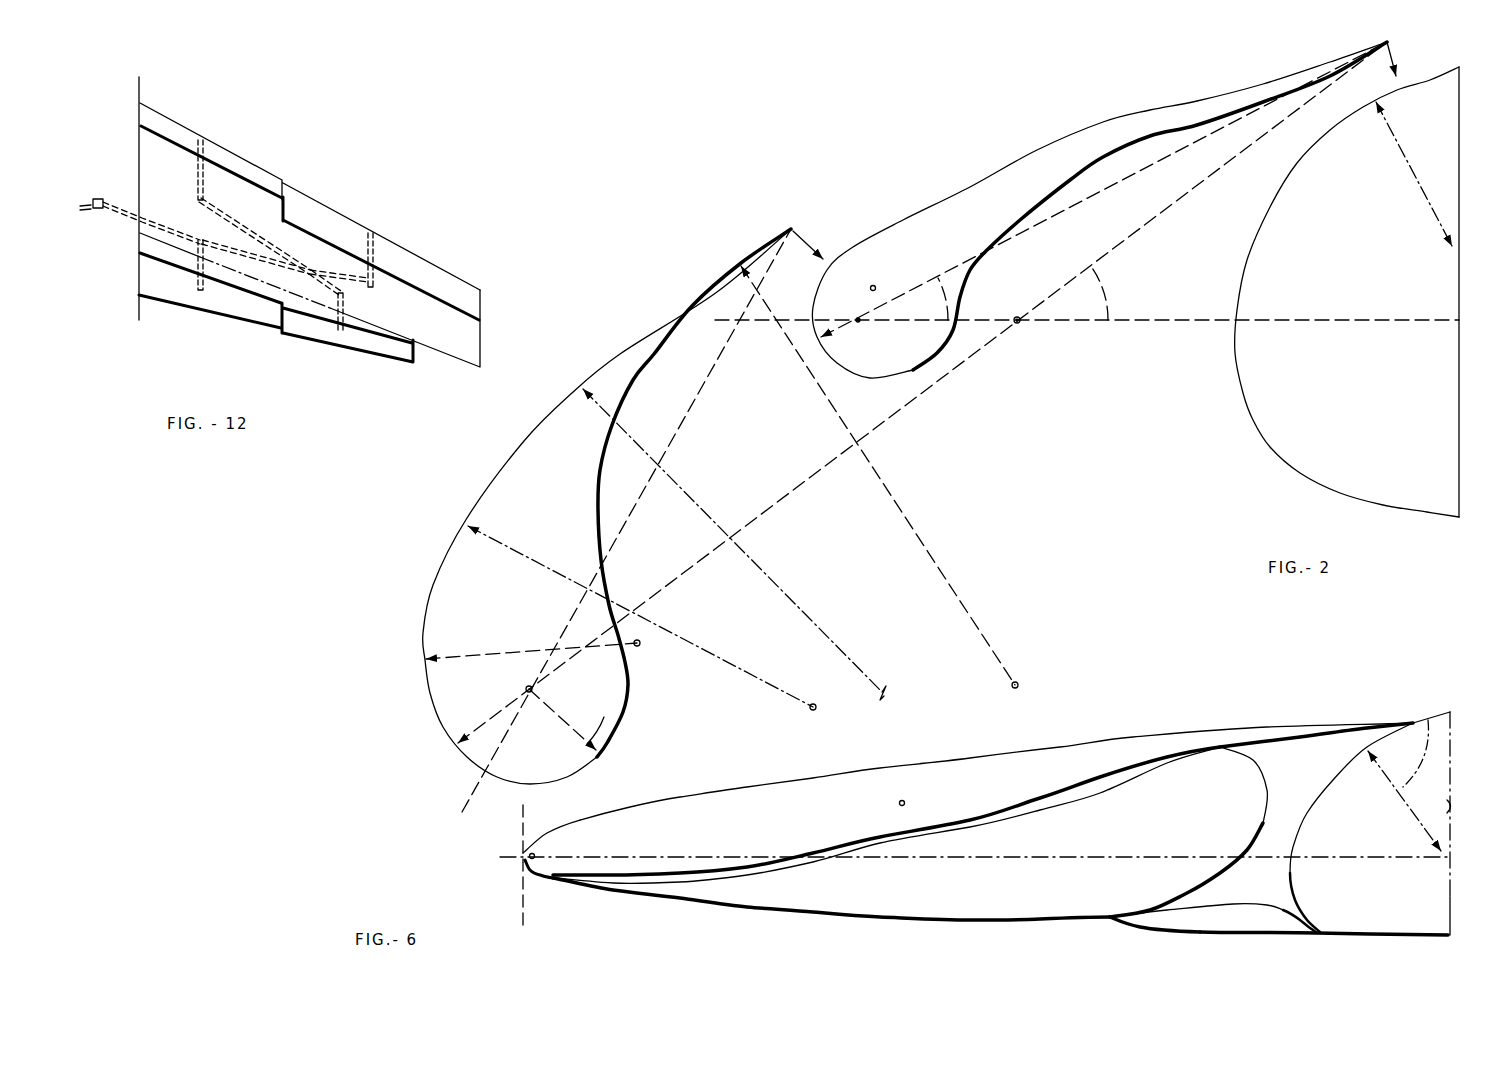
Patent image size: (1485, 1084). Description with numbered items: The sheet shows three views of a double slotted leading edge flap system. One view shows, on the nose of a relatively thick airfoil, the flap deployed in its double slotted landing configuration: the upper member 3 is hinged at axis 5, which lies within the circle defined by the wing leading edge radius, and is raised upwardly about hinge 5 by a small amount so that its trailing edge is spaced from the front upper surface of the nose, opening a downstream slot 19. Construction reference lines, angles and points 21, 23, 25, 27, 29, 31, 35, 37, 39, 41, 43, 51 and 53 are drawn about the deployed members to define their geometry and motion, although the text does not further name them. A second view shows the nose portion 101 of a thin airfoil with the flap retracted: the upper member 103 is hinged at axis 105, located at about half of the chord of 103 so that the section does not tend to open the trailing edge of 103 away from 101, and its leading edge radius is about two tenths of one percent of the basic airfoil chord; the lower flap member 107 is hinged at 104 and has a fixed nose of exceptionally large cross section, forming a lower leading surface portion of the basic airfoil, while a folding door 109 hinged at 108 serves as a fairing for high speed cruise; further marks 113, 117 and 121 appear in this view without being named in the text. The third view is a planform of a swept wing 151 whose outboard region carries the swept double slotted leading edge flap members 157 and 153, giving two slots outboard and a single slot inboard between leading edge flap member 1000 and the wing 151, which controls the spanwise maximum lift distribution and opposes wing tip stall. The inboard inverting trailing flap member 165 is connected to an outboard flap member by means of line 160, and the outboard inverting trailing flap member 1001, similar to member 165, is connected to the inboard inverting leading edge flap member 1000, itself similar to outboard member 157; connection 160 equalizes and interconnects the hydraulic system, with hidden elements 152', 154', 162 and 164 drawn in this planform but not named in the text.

In FIG. 2, the upper member 3 is at (1098, 117).
In FIG. 2, the hinge axis 5 is at (873, 285).
In FIG. 2, the downstream slot 19 is at (1393, 62).
In FIG. 2, the wing nose contour 21 is at (1407, 157).
In FIG. 2, the reference line 23 is at (895, 416).
In FIG. 2, the angle 25 is at (1103, 280).
In FIG. 2, the reference line 27 is at (1117, 177).
In FIG. 2, the angle 29 is at (950, 310).
In FIG. 2, the reference line 31 is at (675, 443).
In FIG. 2, the angle 35 is at (623, 730).
In FIG. 2, the angle 37 is at (452, 656).
In FIG. 2, the reference point 39 is at (640, 647).
In FIG. 2, the reference line 41 is at (623, 604).
In FIG. 2, the reference point 43 is at (810, 708).
In FIG. 2, the reference point 51 is at (1018, 682).
In FIG. 2, the slat leading edge 53 is at (808, 246).
In FIG. 6, the nose portion 101 is at (1377, 932).
In FIG. 6, the upper member 103 is at (804, 779).
In FIG. 6, the hinge axis 104 is at (523, 861).
In FIG. 6, the hinge axis 105 is at (903, 801).
In FIG. 6, the lower flap member 107 is at (903, 917).
In FIG. 6, the hinge 108 is at (1324, 932).
In FIG. 6, the folding door 109 is at (1177, 928).
In FIG. 6, the fixed leading edge nose 113 is at (1387, 748).
In FIG. 6, the upper surface panel 117 is at (1293, 750).
In FIG. 6, the wing station 121 is at (1424, 716).
In FIG. 12, the swept wing 151 is at (478, 352).
In FIG. 12, the hinge rib 152' is at (151, 295).
In FIG. 12, the swept leading edge flap member 153 is at (445, 299).
In FIG. 12, the hinge rib 154' is at (397, 244).
In FIG. 12, the outboard swept leading edge member 157 is at (407, 251).
In FIG. 12, the line 160 is at (312, 258).
In FIG. 12, the control cable 162 is at (150, 220).
In FIG. 12, the actuator 164 is at (101, 199).
In FIG. 12, the inboard inverting trailing flap member 165 is at (222, 314).
In FIG. 12, the inboard inverting leading edge flap member 1000 is at (230, 152).
In FIG. 12, the outboard inverting trailing flap member 1001 is at (357, 352).